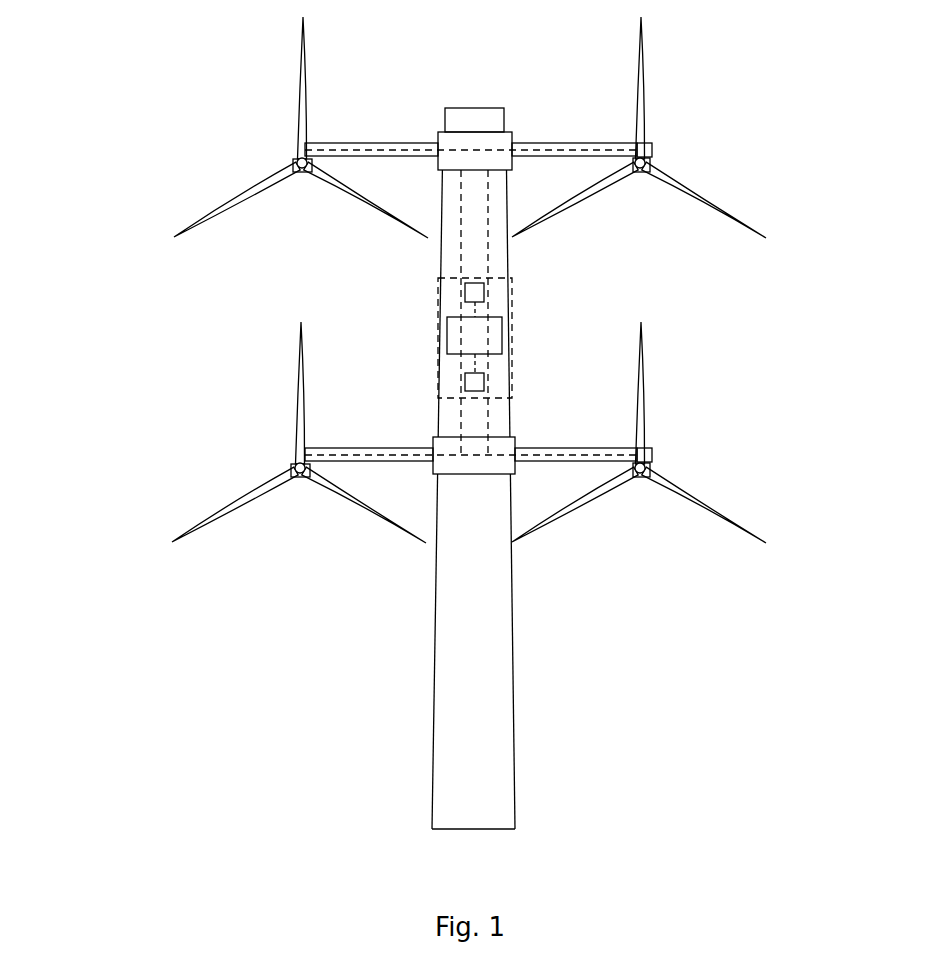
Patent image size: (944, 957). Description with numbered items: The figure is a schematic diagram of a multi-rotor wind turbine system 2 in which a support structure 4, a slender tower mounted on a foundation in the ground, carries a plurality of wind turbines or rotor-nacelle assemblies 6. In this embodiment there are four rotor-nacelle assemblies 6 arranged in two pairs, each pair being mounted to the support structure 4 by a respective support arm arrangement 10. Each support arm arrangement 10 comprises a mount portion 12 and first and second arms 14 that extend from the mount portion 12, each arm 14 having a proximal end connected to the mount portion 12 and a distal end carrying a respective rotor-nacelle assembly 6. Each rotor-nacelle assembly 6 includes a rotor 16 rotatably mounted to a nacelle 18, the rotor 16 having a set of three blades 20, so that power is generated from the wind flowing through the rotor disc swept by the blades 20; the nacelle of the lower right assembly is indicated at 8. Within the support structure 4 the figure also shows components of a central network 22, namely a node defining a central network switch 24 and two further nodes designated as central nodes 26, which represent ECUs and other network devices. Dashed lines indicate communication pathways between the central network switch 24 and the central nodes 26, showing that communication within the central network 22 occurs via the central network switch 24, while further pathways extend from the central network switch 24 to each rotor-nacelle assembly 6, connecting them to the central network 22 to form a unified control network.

The wind turbine system 2 is at (150, 92).
The support structure 4 is at (452, 671).
The rotor-nacelle assembly 6 is at (608, 228).
The nacelle 8 is at (655, 455).
The support arm arrangement 10 is at (370, 123).
The mount portion 12 is at (447, 143).
The support arm 14 is at (532, 143).
The rotor 16 is at (659, 154).
The nacelle 18 is at (642, 172).
The blade 20 is at (645, 102).
The central network 22 is at (432, 337).
The central network switch 24 is at (493, 335).
The central node 26 is at (465, 292).